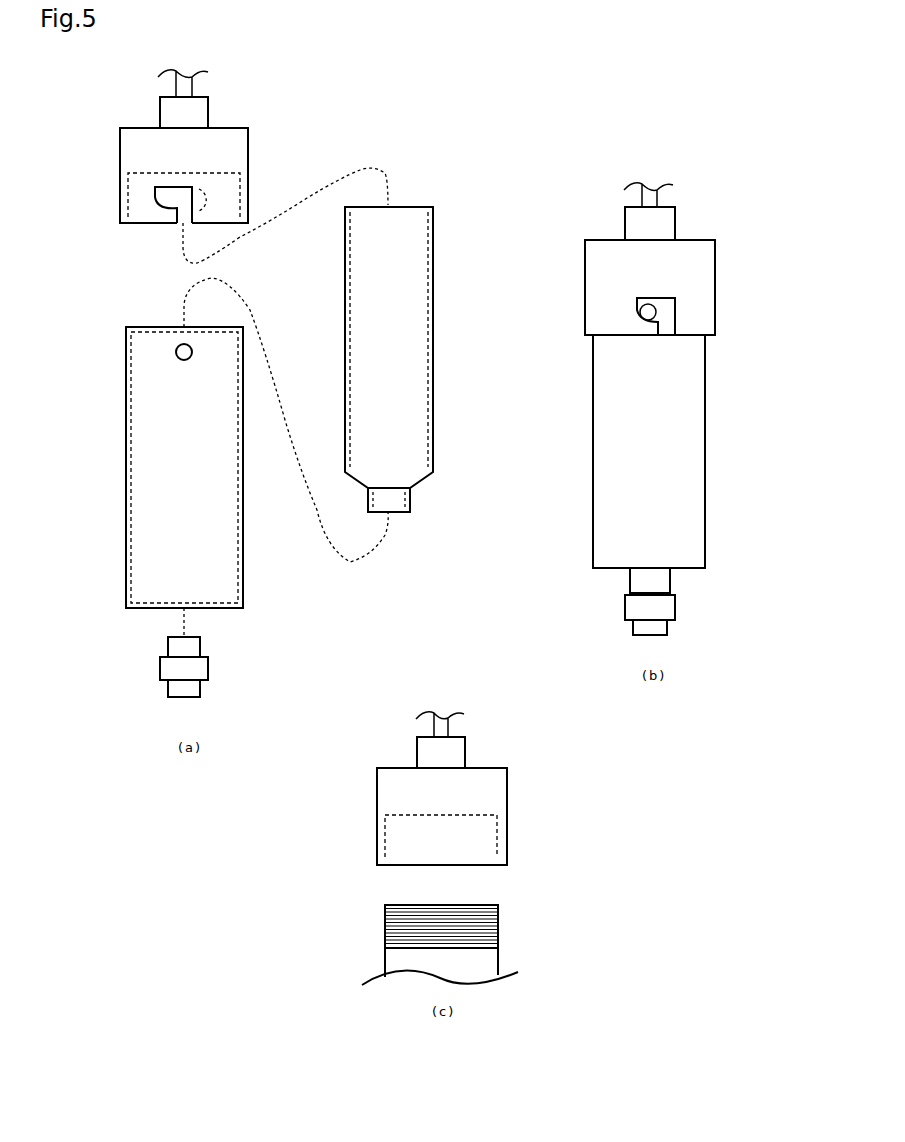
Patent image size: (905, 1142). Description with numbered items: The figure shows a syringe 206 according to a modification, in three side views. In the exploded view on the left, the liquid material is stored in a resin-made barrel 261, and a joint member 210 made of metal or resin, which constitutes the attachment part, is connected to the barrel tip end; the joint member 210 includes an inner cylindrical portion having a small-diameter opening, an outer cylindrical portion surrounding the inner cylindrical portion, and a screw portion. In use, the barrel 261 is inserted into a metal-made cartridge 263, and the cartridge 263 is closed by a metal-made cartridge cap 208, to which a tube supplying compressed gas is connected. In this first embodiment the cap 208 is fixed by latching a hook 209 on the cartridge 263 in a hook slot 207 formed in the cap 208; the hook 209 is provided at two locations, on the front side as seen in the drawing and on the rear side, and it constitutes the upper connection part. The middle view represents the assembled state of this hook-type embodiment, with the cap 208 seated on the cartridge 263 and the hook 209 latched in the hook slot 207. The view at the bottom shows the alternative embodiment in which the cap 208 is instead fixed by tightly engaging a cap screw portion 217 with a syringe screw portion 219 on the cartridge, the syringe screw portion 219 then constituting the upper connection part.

The syringe 206 is at (752, 375).
The hook slot 207 is at (154, 198).
The cartridge cap 208 is at (248, 130).
The hook 209 is at (176, 352).
The joint member 210 is at (208, 668).
The cap screw portion 217 is at (497, 849).
The syringe screw portion 219 is at (498, 937).
The barrel 261 is at (433, 330).
The cartridge 263 is at (243, 578).